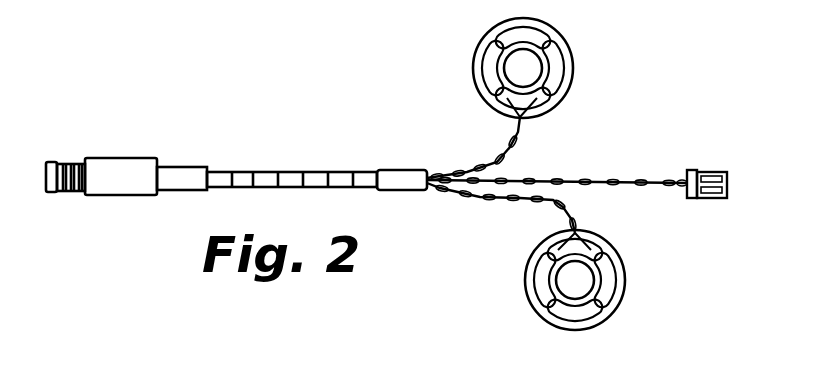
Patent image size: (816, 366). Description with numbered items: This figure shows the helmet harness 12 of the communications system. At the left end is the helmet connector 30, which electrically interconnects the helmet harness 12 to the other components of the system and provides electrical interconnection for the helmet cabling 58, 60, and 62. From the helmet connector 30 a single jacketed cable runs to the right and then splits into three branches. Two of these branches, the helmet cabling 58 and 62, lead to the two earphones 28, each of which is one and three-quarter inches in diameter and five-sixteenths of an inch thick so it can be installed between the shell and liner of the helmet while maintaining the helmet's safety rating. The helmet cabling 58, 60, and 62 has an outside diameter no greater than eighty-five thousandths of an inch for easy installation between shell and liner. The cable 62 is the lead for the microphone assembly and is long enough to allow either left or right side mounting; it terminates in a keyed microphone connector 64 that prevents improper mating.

The helmet harness 12 is at (295, 170).
The earphone 28 is at (583, 93).
The helmet connector 30 is at (65, 158).
The helmet cabling 58 is at (490, 200).
The helmet cabling 60 is at (591, 178).
The cable 62 is at (503, 155).
The microphone connector 64 is at (708, 170).